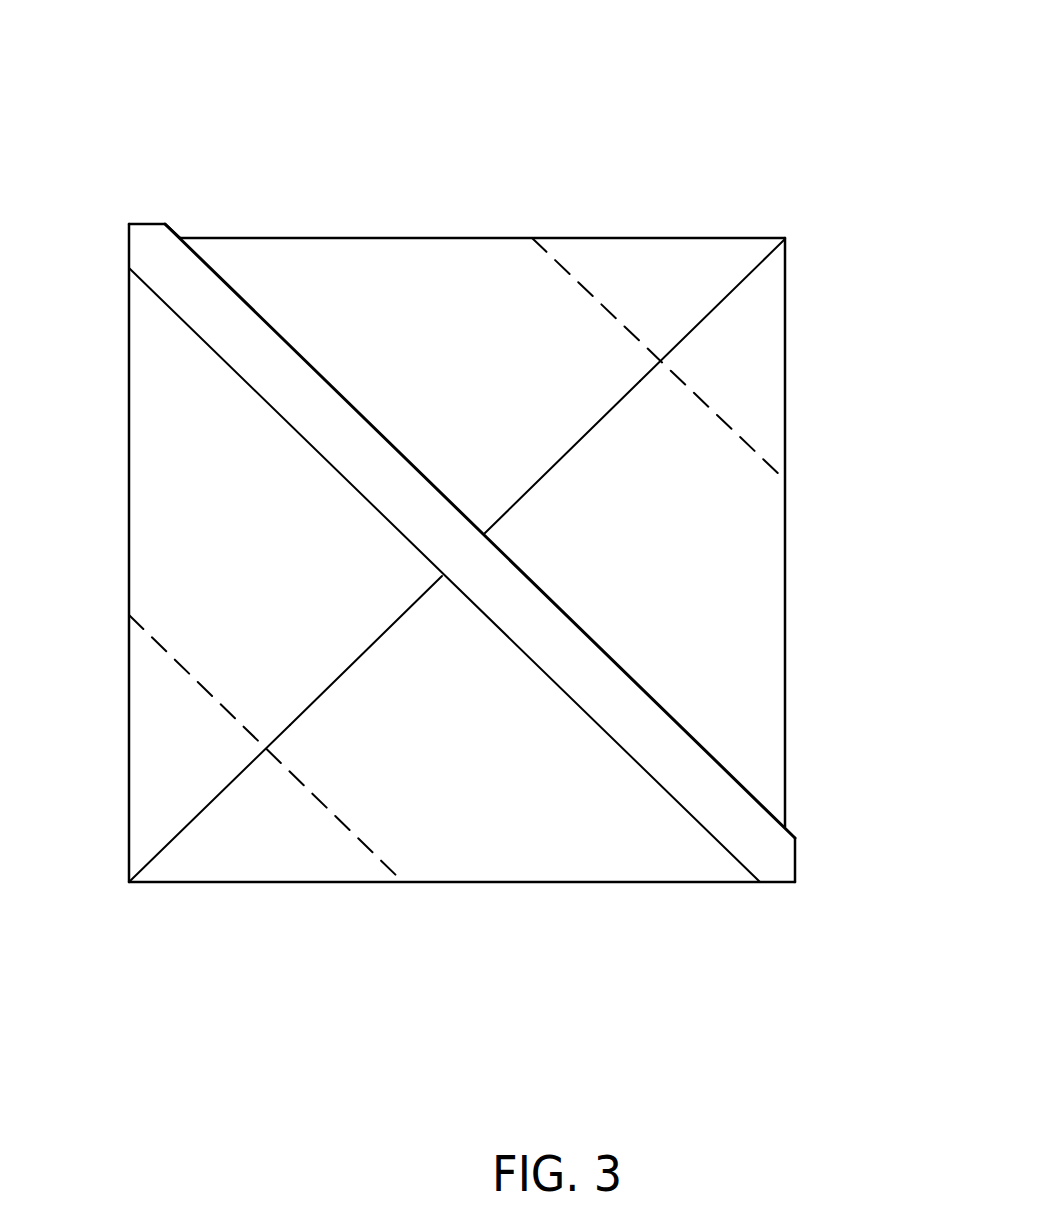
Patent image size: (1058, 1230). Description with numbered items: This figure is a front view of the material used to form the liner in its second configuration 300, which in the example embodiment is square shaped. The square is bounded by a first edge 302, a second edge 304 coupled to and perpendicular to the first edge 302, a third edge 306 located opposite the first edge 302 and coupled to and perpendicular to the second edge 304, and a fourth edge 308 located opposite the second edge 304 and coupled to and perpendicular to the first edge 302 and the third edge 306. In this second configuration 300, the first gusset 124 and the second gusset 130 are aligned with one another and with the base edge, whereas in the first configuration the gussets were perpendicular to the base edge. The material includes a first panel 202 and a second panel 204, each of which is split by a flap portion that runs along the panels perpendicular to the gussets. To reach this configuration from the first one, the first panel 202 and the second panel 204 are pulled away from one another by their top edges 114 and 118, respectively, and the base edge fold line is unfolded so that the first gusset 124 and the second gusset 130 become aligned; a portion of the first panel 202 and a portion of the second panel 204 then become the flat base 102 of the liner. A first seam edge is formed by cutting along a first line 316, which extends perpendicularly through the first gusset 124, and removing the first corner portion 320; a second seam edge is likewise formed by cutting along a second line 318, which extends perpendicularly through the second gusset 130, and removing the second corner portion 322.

The second configuration 300 is at (731, 126).
The base 102 is at (442, 310).
The top edge 114 is at (163, 253).
The top edge 118 is at (735, 818).
The first gusset 124 is at (129, 880).
The second gusset 130 is at (760, 260).
The first panel 202 is at (738, 565).
The second panel 204 is at (372, 267).
The first edge 302 is at (305, 237).
The second edge 304 is at (785, 665).
The third edge 306 is at (583, 883).
The fourth edge 308 is at (128, 553).
The first line 316 is at (222, 707).
The second line 318 is at (602, 305).
The first corner portion 320 is at (244, 894).
The second corner portion 322 is at (806, 353).